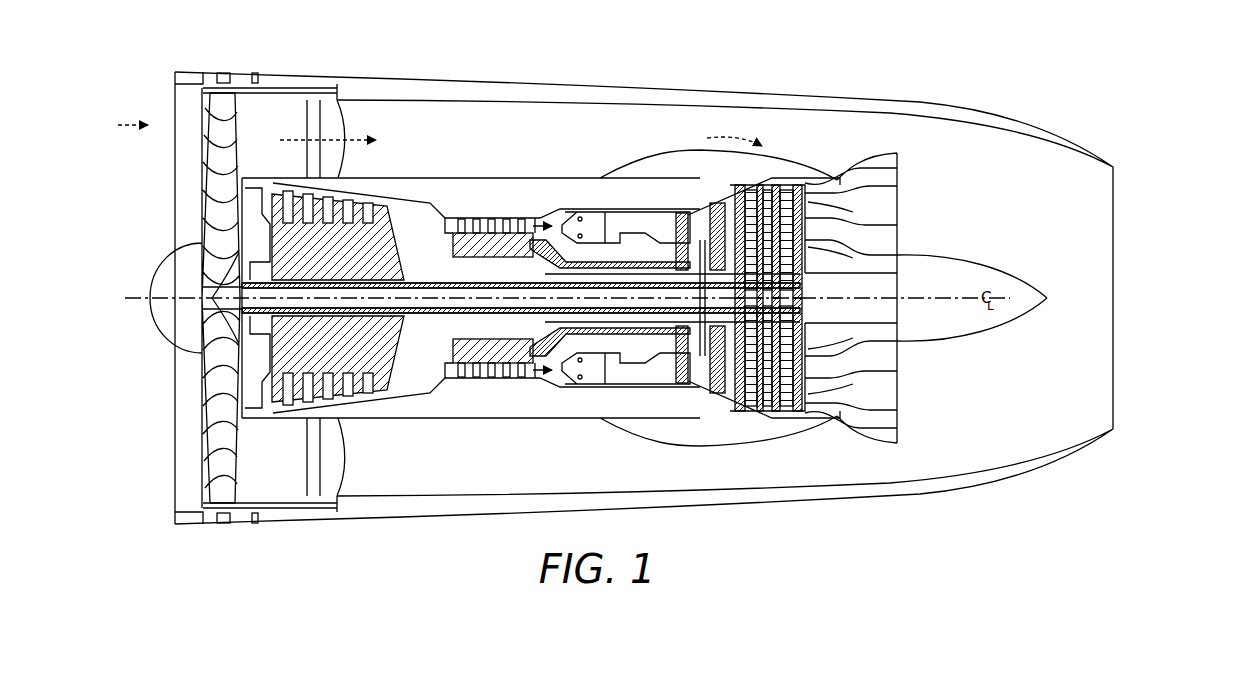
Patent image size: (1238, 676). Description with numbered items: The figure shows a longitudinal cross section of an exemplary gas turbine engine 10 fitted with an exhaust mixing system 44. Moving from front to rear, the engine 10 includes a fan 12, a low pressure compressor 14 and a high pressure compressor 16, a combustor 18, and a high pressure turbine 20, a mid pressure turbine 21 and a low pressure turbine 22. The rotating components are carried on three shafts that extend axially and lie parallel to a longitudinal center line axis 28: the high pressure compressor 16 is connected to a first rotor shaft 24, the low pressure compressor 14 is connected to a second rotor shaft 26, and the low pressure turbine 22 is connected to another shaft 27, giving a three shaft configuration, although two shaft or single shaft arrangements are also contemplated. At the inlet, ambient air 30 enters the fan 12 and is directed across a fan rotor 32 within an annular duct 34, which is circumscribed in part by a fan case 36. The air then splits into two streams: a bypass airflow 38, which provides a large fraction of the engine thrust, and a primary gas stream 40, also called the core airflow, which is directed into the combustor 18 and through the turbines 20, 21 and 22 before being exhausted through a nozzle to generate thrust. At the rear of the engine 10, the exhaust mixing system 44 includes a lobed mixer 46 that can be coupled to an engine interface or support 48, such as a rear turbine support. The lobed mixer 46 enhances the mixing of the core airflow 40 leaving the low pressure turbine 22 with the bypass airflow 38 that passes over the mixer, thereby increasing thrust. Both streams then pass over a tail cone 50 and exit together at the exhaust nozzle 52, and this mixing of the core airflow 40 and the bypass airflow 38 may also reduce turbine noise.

The gas turbine engine 10 is at (635, 44).
The fan 12 is at (151, 456).
The low pressure compressor 14 is at (365, 243).
The high pressure compressor 16 is at (496, 362).
The combustor 18 is at (592, 378).
The high pressure turbine 20 is at (680, 213).
The mid pressure turbine 21 is at (713, 398).
The low pressure turbine 22 is at (740, 190).
The first rotor shaft 24 is at (613, 338).
The second rotor shaft 26 is at (708, 400).
The shaft 27 is at (718, 408).
The longitudinal center line axis 28 is at (970, 297).
The ambient air 30 is at (141, 125).
The fan rotor 32 is at (217, 514).
The annular duct 34 is at (337, 476).
The fan case 36 is at (264, 527).
The bypass airflow 38 is at (367, 138).
The primary gas stream 40 is at (452, 218).
The exhaust mixing system 44 is at (856, 449).
The lobed mixer 46 is at (898, 195).
The engine interface or support 48 is at (783, 180).
The tail cone 50 is at (960, 341).
The exhaust nozzle 52 is at (1146, 185).